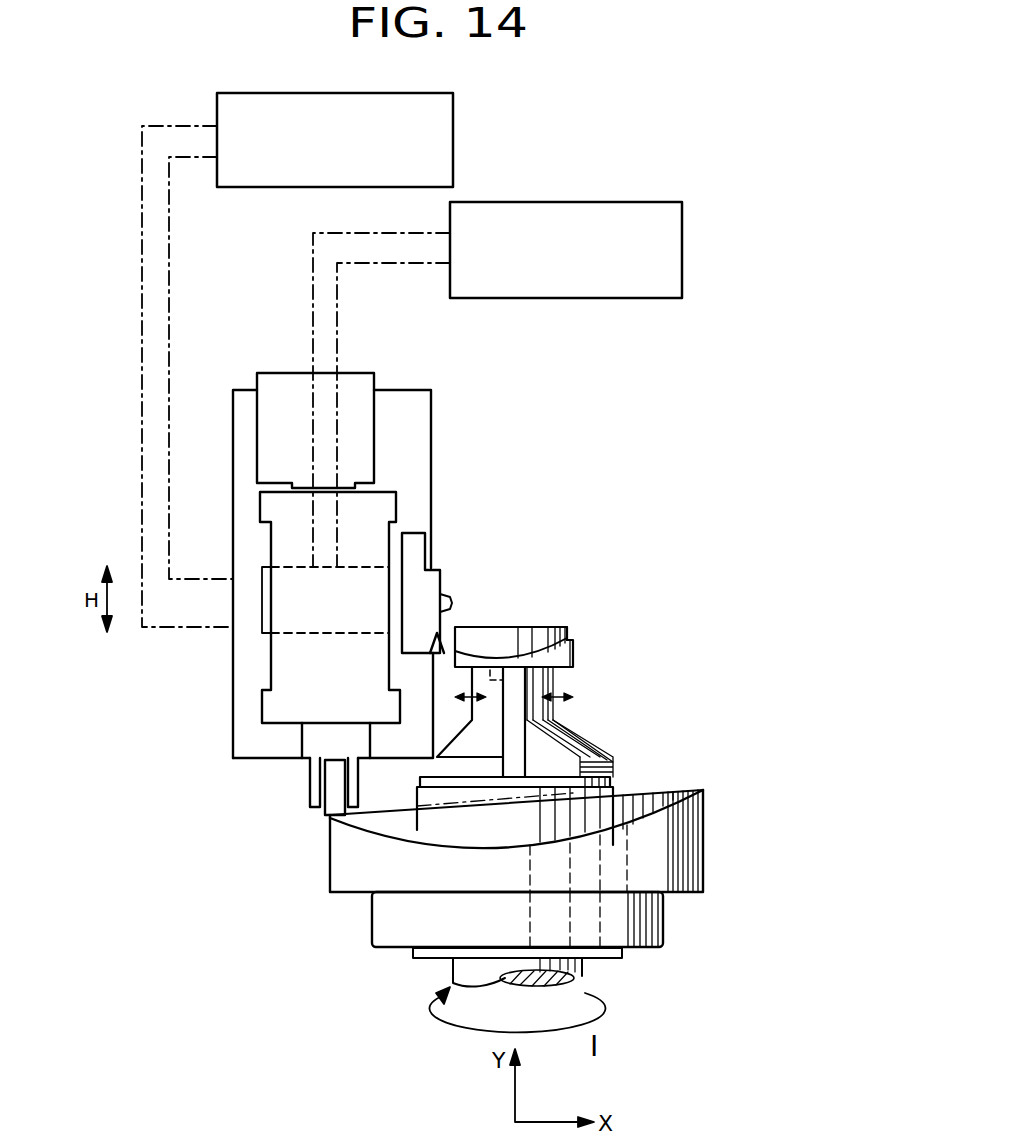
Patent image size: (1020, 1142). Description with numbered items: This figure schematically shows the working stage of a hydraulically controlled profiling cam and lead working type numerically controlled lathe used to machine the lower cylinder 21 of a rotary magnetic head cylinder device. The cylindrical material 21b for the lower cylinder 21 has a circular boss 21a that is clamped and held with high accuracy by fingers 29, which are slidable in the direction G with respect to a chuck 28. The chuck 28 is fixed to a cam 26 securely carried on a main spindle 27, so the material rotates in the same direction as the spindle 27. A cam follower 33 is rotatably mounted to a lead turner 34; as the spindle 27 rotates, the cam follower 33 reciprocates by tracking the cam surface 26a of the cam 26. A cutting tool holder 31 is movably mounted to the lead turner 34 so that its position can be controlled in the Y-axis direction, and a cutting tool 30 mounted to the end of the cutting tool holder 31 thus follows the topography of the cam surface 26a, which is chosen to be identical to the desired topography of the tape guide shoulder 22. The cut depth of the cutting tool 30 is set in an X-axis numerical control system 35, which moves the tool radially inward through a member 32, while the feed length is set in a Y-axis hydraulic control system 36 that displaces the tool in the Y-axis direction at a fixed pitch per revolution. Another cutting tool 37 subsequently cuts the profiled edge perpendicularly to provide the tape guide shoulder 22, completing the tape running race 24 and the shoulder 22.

The lower cylinder 21 is at (572, 652).
The circular boss 21a is at (535, 675).
The cylindrical material 21b is at (564, 630).
The tape guide shoulder 22 is at (477, 657).
The tape running race 24 is at (532, 627).
The cam 26 is at (703, 845).
The cam surface 26a is at (660, 800).
The main spindle 27 is at (663, 931).
The chuck 28 is at (620, 800).
The fingers 29 is at (563, 737).
The cutting tool 30 is at (442, 597).
The cutting tool holder 31 is at (426, 568).
The member 32 is at (431, 405).
The cam follower 33 is at (333, 779).
The lead turner 34 is at (397, 500).
The X-axis numerical control system 35 is at (296, 93).
The Y-axis hydraulic control system 36 is at (622, 202).
The another cutting tool 37 is at (437, 655).
The direction G is at (553, 702).